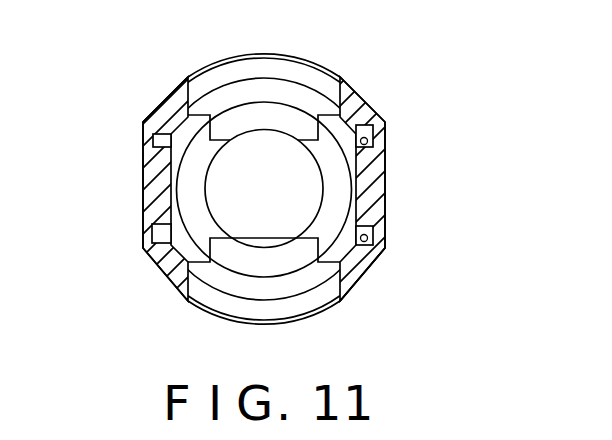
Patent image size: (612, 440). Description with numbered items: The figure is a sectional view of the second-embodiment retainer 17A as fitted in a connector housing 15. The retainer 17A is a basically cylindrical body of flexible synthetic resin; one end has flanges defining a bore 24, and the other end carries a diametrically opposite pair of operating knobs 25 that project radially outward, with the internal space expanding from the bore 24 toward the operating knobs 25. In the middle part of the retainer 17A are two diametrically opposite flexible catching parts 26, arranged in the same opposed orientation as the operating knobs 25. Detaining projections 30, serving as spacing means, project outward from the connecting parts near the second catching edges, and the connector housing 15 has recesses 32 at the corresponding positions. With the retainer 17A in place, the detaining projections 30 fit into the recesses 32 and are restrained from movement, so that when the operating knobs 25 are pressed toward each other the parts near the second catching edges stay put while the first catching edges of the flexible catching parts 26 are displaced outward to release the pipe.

The connector housing 15 is at (363, 61).
The retainer 17A is at (241, 56).
The bore 24 is at (320, 170).
The operating knobs 25 is at (298, 66).
The flexible catching parts 26 is at (296, 122).
The detaining projections 30 is at (373, 145).
The recesses 32 is at (174, 123).